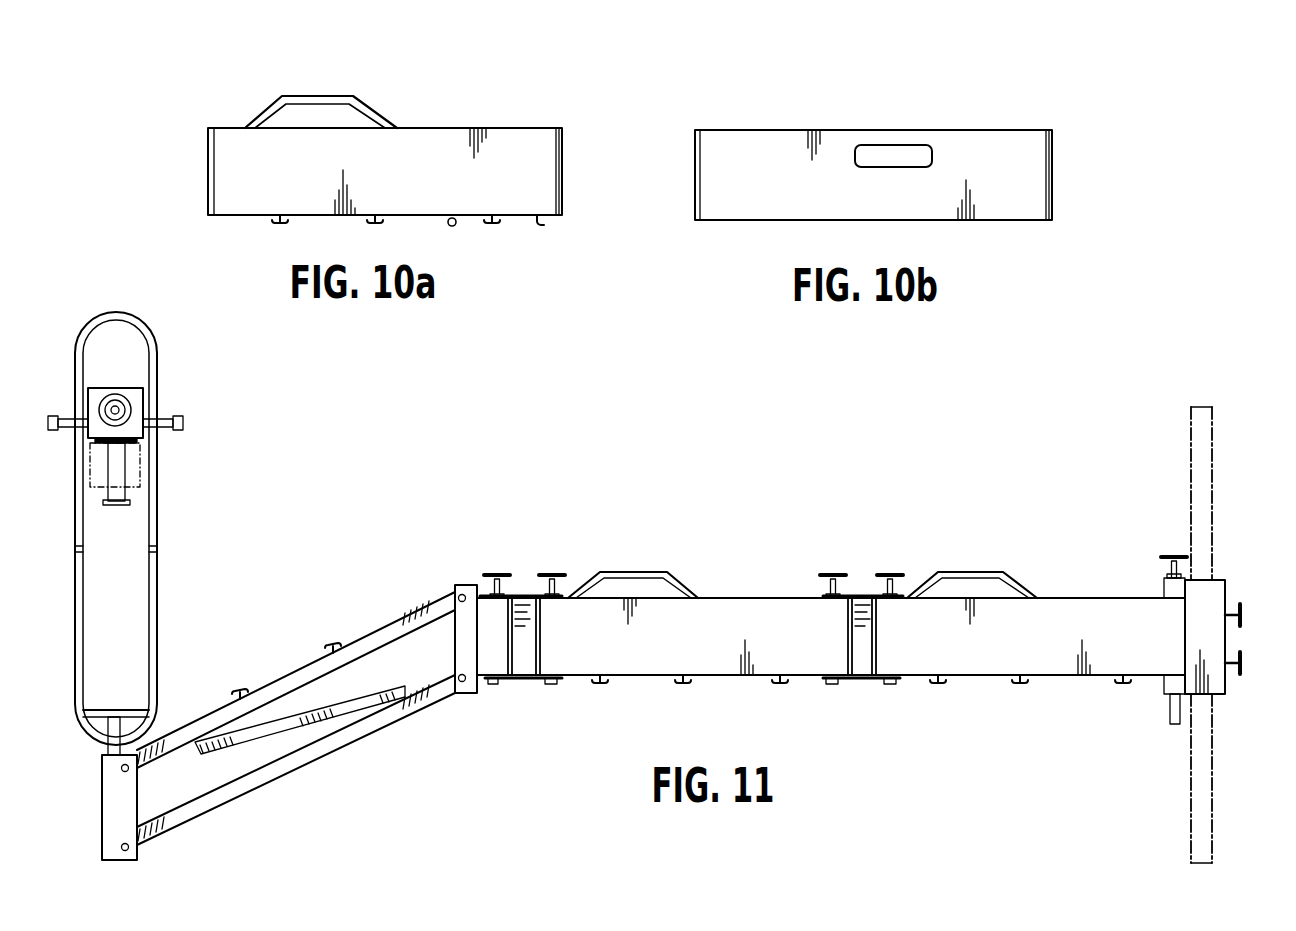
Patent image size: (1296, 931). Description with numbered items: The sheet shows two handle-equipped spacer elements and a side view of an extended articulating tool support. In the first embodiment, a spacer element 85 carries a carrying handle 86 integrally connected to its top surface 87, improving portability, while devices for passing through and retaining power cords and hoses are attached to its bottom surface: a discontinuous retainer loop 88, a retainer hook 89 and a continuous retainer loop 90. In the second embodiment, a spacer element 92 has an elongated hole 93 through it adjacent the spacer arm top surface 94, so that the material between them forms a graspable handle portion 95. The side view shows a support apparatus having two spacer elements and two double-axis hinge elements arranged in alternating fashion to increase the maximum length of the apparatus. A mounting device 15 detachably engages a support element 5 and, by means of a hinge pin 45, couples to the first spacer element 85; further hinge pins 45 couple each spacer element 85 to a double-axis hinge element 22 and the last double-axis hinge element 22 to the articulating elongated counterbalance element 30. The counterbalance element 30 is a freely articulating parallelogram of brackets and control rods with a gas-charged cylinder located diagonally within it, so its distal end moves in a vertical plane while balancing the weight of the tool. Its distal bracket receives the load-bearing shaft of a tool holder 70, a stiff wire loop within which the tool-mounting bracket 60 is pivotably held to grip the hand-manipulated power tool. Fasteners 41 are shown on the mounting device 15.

In FIG. 11, the support element 5 is at (1191, 428).
In FIG. 11, the mounting device 15 is at (1215, 580).
In FIG. 11, the double-axis hinge element 22 is at (525, 598).
In FIG. 11, the articulating elongated counterbalance element 30 is at (274, 656).
In FIG. 11, the fastener bolts 41 is at (1245, 617).
In FIG. 11, the hinge pin 45 is at (490, 572).
In FIG. 11, the tool-mounting bracket 60 is at (120, 388).
In FIG. 11, the tool holder 70 is at (182, 568).
In FIG. 10a, the spacer element 85 is at (526, 116).
In FIG. 11, the spacer element 85 is at (722, 598).
In FIG. 10a, the carrying handle 86 is at (362, 120).
In FIG. 10a, the top surface 87 is at (449, 128).
In FIG. 10a, the discontinuous retainer loop 88 is at (496, 232).
In FIG. 10a, the retainer hook 89 is at (543, 229).
In FIG. 10a, the continuous retainer loop 90 is at (455, 227).
In FIG. 10b, the spacer element 92 is at (1010, 118).
In FIG. 10b, the elongated hole 93 is at (910, 150).
In FIG. 10b, the spacer arm top surface 94 is at (750, 138).
In FIG. 10b, the graspable handle portion 95 is at (892, 137).